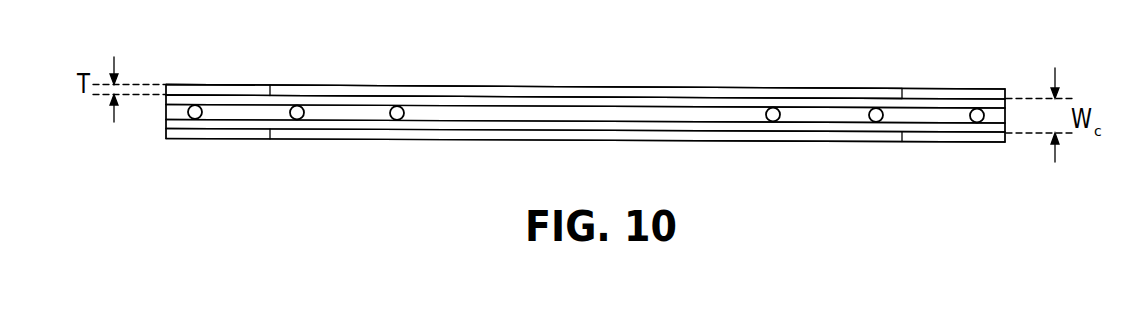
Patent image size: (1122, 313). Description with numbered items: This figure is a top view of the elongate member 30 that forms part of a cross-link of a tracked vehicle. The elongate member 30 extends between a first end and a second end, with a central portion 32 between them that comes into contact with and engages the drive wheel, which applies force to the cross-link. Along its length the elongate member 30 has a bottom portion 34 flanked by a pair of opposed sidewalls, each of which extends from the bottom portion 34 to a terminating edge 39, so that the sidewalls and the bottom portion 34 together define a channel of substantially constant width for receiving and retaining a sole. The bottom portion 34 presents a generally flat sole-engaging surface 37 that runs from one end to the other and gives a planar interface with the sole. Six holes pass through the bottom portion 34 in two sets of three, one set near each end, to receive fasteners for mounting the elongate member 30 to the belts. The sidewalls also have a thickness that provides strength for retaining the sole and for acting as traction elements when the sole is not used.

The elongate member 30 is at (738, 52).
The central portion 32 is at (591, 87).
The bottom portion 34 is at (933, 113).
The sole-engaging surface 37 is at (653, 113).
The terminating edge 39 is at (872, 93).